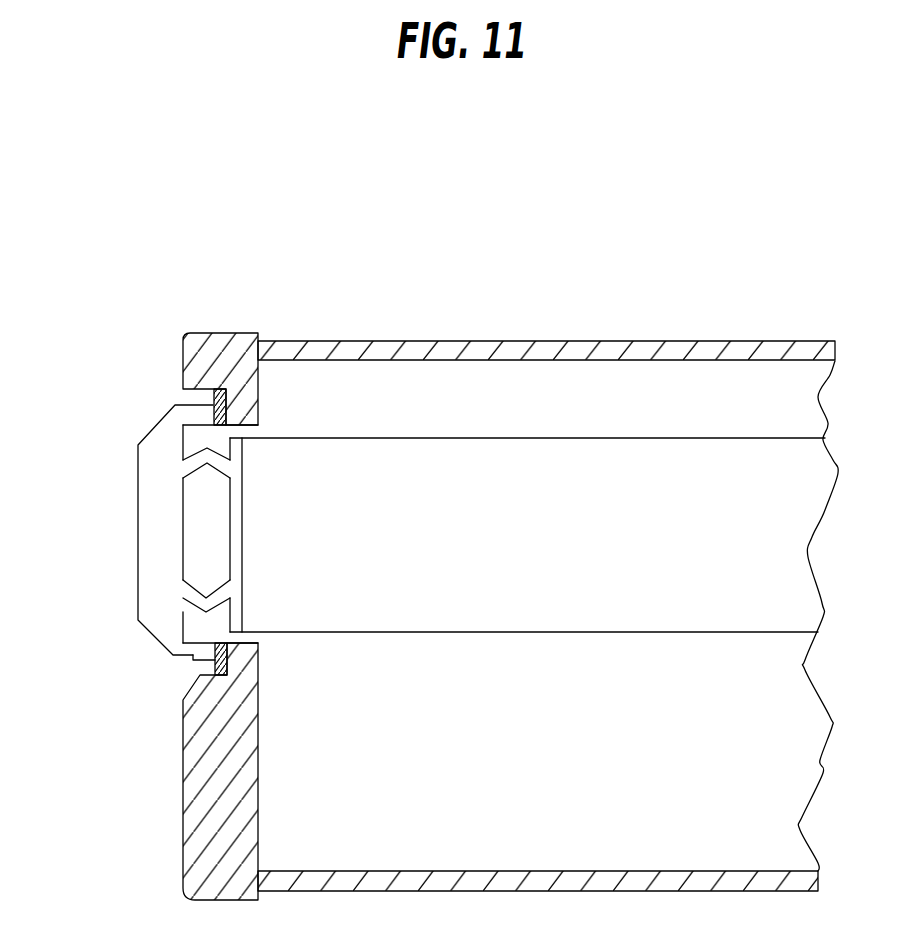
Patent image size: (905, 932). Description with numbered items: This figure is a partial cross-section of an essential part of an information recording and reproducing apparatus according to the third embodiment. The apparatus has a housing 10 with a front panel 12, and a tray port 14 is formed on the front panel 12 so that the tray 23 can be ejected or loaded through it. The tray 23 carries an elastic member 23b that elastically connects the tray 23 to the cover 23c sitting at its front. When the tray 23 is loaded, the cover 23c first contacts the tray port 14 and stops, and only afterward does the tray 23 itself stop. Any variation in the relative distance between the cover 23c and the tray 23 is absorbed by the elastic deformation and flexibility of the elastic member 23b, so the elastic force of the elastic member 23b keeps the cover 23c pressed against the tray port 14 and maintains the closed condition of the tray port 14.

The housing 10 is at (495, 340).
The front panel 12 is at (207, 812).
The tray port 14 is at (190, 668).
The tray 23 is at (762, 532).
The elastic member 23b is at (230, 477).
The cover 23c is at (160, 519).